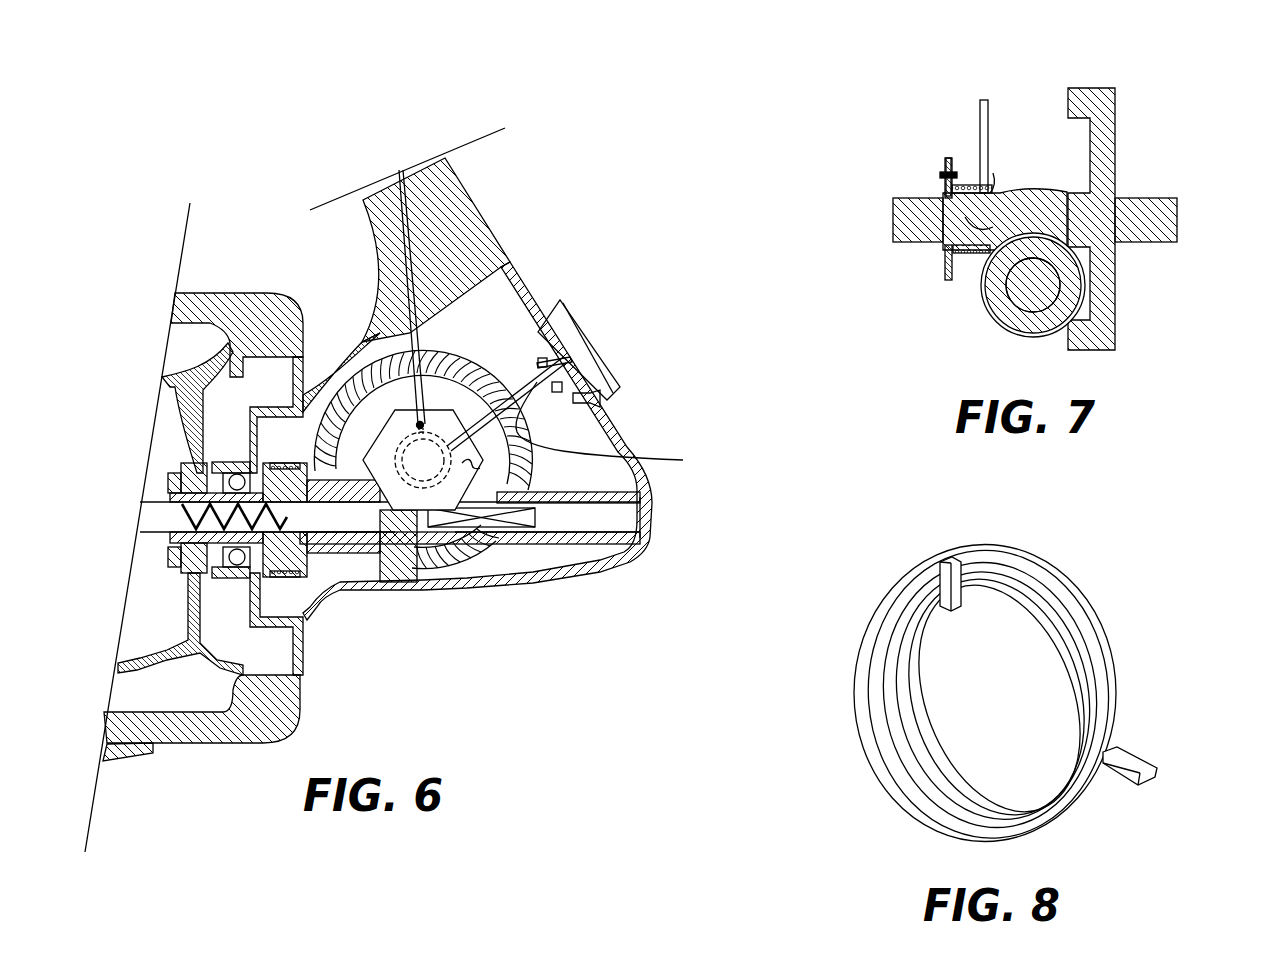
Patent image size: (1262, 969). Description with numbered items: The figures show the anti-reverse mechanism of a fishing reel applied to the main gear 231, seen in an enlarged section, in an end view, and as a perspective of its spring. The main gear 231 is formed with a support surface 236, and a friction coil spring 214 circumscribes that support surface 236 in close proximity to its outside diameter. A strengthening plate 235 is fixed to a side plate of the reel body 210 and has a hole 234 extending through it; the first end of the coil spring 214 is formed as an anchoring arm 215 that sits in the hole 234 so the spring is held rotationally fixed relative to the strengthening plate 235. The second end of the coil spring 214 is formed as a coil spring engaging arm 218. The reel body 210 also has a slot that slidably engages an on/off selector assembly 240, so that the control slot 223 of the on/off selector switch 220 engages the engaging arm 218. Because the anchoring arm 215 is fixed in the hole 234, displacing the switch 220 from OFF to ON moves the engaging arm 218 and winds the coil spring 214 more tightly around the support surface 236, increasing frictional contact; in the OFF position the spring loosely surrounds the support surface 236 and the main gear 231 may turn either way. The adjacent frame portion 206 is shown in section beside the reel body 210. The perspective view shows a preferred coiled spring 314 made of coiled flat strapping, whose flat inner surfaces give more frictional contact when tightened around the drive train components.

In FIG. 6, the support frame 206 is at (163, 377).
In FIG. 6, the reel body 210 is at (462, 208).
In FIG. 6, the coil spring 214 is at (410, 490).
In FIG. 7, the coil spring 214 is at (967, 253).
In FIG. 6, the anchoring arm 215 is at (419, 422).
In FIG. 7, the anchoring arm 215 is at (940, 175).
In FIG. 6, the coil spring engaging arm 218 is at (625, 428).
In FIG. 7, the coil spring engaging arm 218 is at (985, 128).
In FIG. 6, the on/off selector switch 220 is at (568, 338).
In FIG. 6, the control slot 223 is at (557, 400).
In FIG. 6, the main gear 231 is at (473, 557).
In FIG. 7, the main gear 231 is at (1112, 92).
In FIG. 6, the hole 234 is at (400, 185).
In FIG. 7, the hole 234 is at (947, 167).
In FIG. 6, the strengthening plate 235 is at (362, 342).
In FIG. 7, the strengthening plate 235 is at (947, 158).
In FIG. 6, the support surface 236 is at (480, 468).
In FIG. 7, the support surface 236 is at (993, 175).
In FIG. 6, the on/off selector assembly 240 is at (605, 356).
In FIG. 8, the coiled spring 314 is at (1113, 590).